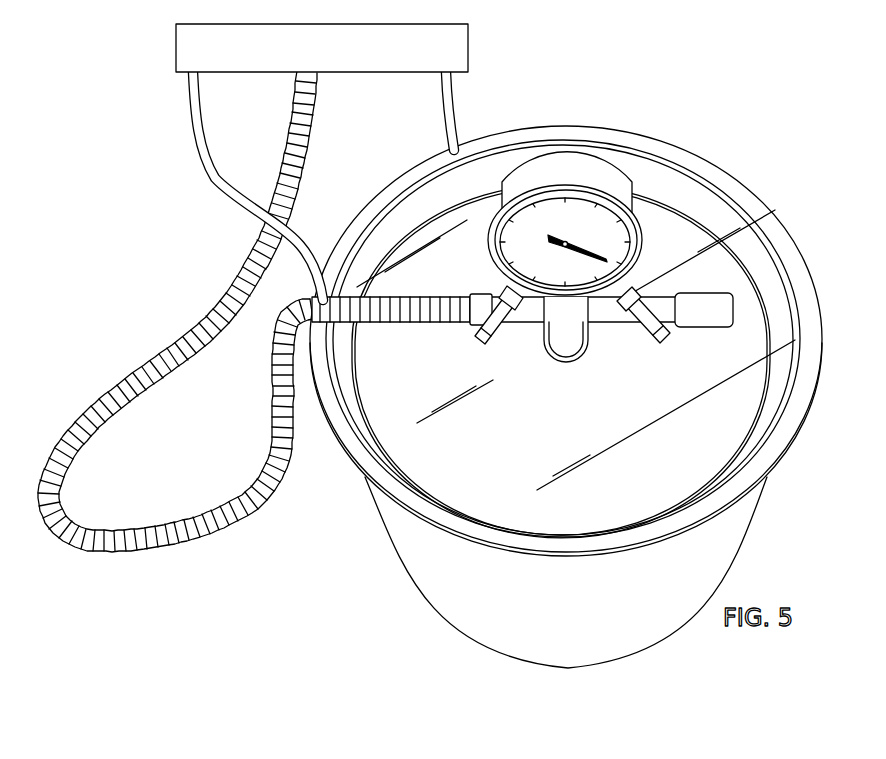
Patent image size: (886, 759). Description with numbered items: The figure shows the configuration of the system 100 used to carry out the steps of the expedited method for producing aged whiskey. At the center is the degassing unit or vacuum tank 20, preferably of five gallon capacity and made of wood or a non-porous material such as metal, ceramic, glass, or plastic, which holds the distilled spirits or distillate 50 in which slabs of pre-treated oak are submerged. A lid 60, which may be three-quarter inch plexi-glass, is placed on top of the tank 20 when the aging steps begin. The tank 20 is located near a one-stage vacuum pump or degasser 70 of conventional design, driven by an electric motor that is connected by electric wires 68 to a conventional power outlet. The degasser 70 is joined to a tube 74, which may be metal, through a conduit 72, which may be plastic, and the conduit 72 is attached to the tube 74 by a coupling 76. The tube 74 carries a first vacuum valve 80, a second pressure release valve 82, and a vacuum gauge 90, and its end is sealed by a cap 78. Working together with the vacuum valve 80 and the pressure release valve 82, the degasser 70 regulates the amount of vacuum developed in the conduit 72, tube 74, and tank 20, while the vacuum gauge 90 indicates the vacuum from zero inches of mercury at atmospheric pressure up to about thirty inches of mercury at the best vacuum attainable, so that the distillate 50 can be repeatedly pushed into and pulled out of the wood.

The system 100 is at (765, 116).
The vacuum tank 20 is at (740, 543).
The distillate 50 is at (795, 282).
The lid 60 is at (796, 440).
The electric wires 68 is at (198, 150).
The degasser 70 is at (313, 57).
The conduit 72 is at (318, 128).
The tube 74 is at (611, 327).
The coupling 76 is at (470, 293).
The cap 78 is at (775, 238).
The vacuum valve 80 is at (663, 343).
The pressure release valve 82 is at (478, 346).
The vacuum gauge 90 is at (638, 152).